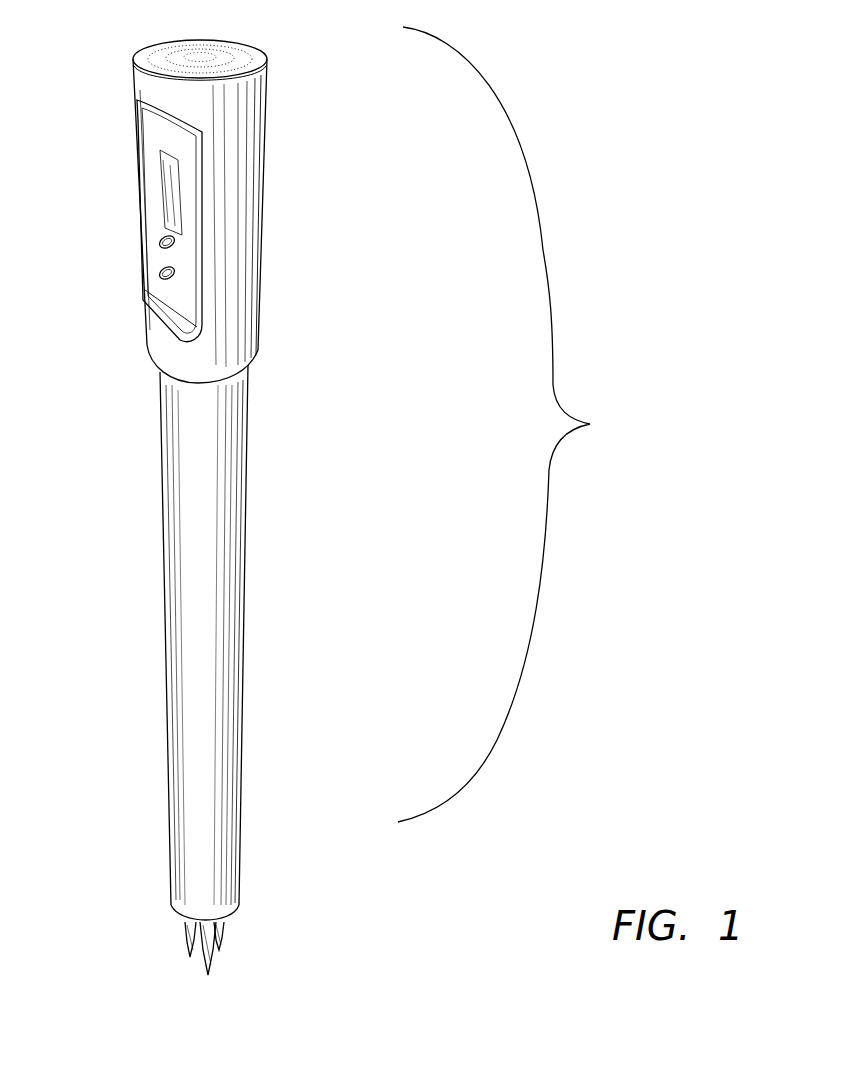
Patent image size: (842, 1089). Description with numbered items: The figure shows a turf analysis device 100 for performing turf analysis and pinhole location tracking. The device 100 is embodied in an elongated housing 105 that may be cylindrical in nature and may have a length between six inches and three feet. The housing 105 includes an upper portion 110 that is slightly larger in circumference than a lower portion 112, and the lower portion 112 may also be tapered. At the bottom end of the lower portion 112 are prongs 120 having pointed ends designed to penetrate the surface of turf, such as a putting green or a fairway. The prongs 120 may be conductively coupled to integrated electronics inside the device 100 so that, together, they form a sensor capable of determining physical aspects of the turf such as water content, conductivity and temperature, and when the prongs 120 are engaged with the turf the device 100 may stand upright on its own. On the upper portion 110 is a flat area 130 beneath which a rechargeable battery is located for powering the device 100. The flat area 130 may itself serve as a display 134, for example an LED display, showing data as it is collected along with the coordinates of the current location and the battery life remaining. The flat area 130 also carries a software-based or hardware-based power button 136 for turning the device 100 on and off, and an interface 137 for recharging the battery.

The turf analysis device 100 is at (600, 164).
The elongated housing 105 is at (522, 424).
The upper portion 110 is at (270, 272).
The lower portion 112 is at (253, 633).
The prongs 120 is at (233, 943).
The flat area 130 is at (178, 137).
The display 134 is at (152, 183).
The power button 136 is at (151, 239).
The interface 137 is at (148, 275).